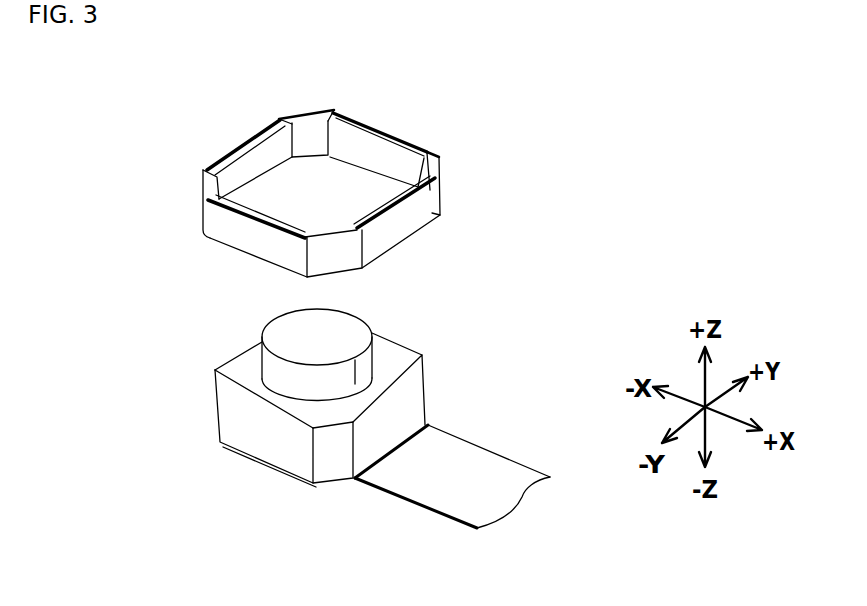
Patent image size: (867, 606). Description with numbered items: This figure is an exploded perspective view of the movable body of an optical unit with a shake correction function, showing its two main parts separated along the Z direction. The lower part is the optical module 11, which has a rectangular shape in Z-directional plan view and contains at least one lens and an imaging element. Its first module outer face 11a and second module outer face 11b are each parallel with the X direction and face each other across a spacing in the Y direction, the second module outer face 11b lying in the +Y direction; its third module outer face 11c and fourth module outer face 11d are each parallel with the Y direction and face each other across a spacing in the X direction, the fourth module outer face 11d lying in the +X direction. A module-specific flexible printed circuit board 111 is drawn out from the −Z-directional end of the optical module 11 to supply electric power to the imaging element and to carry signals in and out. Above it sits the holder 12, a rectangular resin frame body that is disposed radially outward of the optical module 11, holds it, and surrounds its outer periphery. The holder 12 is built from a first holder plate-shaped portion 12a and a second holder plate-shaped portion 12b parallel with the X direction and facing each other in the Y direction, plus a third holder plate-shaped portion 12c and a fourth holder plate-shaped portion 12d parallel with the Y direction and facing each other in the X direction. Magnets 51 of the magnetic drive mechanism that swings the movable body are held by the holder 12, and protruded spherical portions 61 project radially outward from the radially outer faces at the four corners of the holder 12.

The optical module 11 is at (328, 398).
The first module outer face 11a is at (263, 435).
The second module outer face 11b is at (383, 335).
The third module outer face 11c is at (240, 353).
The fourth module outer face 11d is at (405, 417).
The holder 12 is at (337, 177).
The first holder plate-shaped portion 12a is at (243, 233).
The second holder plate-shaped portion 12b is at (357, 120).
The third holder plate-shaped portion 12c is at (256, 138).
The fourth holder plate-shaped portion 12d is at (408, 233).
The magnet 51 is at (218, 150).
The protruded spherical portion 61 is at (302, 108).
The module-specific flexible printed circuit board 111 is at (511, 472).